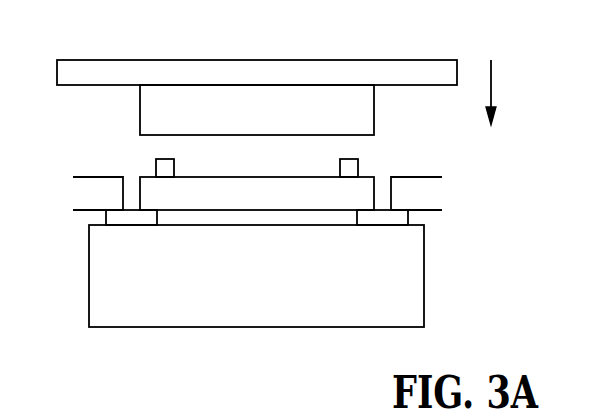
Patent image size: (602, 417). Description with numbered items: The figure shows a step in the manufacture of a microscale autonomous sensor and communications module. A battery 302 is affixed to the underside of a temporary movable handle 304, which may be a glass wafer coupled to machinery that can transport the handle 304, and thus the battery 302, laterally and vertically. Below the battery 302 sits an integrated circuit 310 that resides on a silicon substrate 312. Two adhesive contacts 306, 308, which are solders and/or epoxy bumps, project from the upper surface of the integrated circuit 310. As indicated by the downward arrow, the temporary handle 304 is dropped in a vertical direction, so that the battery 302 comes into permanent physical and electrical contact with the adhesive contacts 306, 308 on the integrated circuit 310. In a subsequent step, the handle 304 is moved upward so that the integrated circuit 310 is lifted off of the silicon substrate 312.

The battery 302 is at (140, 115).
The temporary movable handle 304 is at (392, 60).
The adhesive contact 306 is at (155, 170).
The adhesive contact 308 is at (358, 172).
The integrated circuit 310 is at (250, 177).
The silicon substrate 312 is at (424, 277).